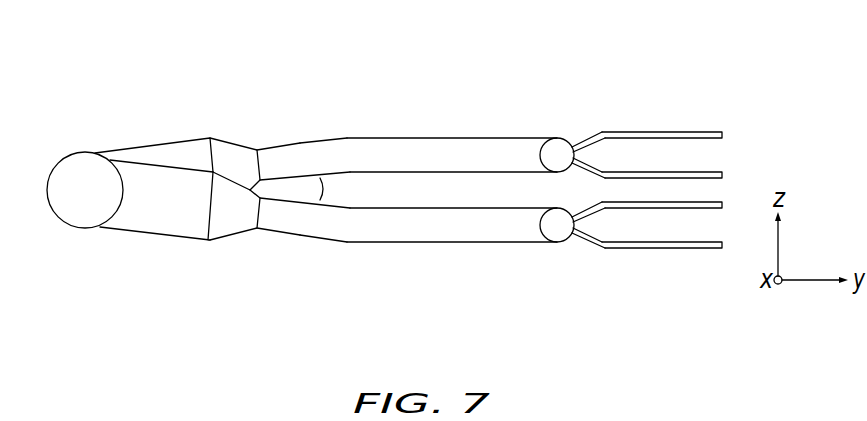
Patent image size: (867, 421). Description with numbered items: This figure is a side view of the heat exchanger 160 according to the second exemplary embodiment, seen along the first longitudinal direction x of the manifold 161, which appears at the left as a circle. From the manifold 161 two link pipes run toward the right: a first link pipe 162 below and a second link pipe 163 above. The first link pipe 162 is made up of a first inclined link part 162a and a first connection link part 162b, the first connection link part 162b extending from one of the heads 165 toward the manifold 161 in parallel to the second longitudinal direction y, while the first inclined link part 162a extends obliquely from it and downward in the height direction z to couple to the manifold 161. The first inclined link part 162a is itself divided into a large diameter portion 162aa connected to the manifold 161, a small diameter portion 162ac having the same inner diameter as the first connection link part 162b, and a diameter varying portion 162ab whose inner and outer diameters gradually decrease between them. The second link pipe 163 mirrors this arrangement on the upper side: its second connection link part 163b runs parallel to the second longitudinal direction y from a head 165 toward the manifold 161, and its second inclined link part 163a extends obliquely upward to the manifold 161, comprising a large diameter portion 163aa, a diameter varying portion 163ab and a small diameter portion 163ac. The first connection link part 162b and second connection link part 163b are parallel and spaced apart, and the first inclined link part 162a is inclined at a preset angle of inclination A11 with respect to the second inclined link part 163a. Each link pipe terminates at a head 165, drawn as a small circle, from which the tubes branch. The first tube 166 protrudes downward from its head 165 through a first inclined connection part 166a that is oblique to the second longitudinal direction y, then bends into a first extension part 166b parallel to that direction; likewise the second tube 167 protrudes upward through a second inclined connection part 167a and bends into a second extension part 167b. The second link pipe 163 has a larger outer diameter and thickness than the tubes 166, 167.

The heat exchanger 160 is at (279, 105).
The manifold 161 is at (80, 175).
The first link pipe 162 is at (411, 246).
The large diameter portion 162aa is at (172, 220).
The diameter varying portion 162ab is at (232, 220).
The first inclined link part 162a is at (314, 242).
The small diameter portion 162ac is at (337, 240).
The first connection link part 162b is at (468, 220).
The second link pipe 163 is at (411, 134).
The large diameter portion 163aa is at (172, 160).
The diameter varying portion 163ab is at (230, 162).
The second inclined link part 163a is at (314, 136).
The small diameter portion 163ac is at (337, 140).
The second connection link part 163b is at (470, 160).
The head 165 is at (556, 153).
The first tube 166 is at (705, 252).
The first inclined connection part 166a is at (585, 245).
The first extension part 166b is at (665, 250).
The second tube 167 is at (705, 128).
The second inclined connection part 167a is at (585, 138).
The second extension part 167b is at (665, 132).
The angle of inclination A11 is at (341, 189).